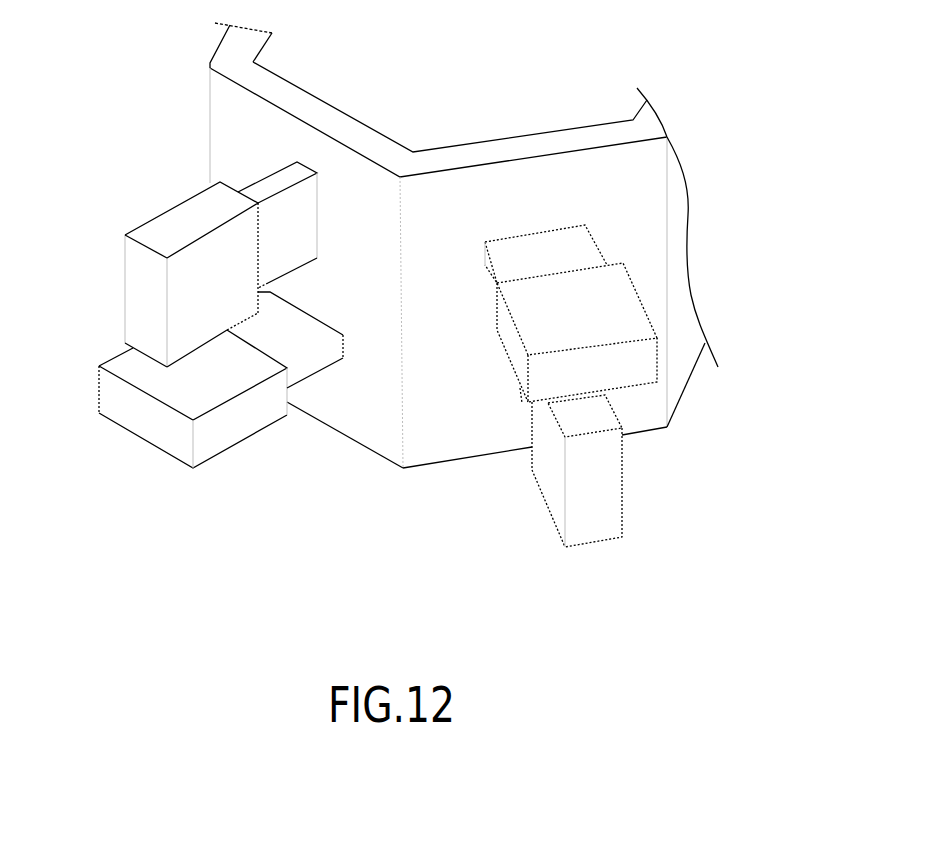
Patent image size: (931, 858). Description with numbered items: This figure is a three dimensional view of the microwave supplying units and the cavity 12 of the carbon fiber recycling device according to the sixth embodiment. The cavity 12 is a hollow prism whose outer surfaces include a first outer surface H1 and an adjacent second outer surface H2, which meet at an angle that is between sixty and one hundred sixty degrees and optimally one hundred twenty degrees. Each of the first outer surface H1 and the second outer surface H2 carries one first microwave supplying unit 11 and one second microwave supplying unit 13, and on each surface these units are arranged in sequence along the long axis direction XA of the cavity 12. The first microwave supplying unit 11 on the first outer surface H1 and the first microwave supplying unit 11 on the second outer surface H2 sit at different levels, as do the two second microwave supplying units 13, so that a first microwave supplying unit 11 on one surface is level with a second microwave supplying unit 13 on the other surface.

The first microwave supplying unit 11 is at (107, 263).
The cavity 12 is at (273, 90).
The second microwave supplying unit 13 is at (80, 374).
The first outer surface H1 is at (372, 428).
The second outer surface H2 is at (483, 440).
The long axis direction XA is at (751, 187).